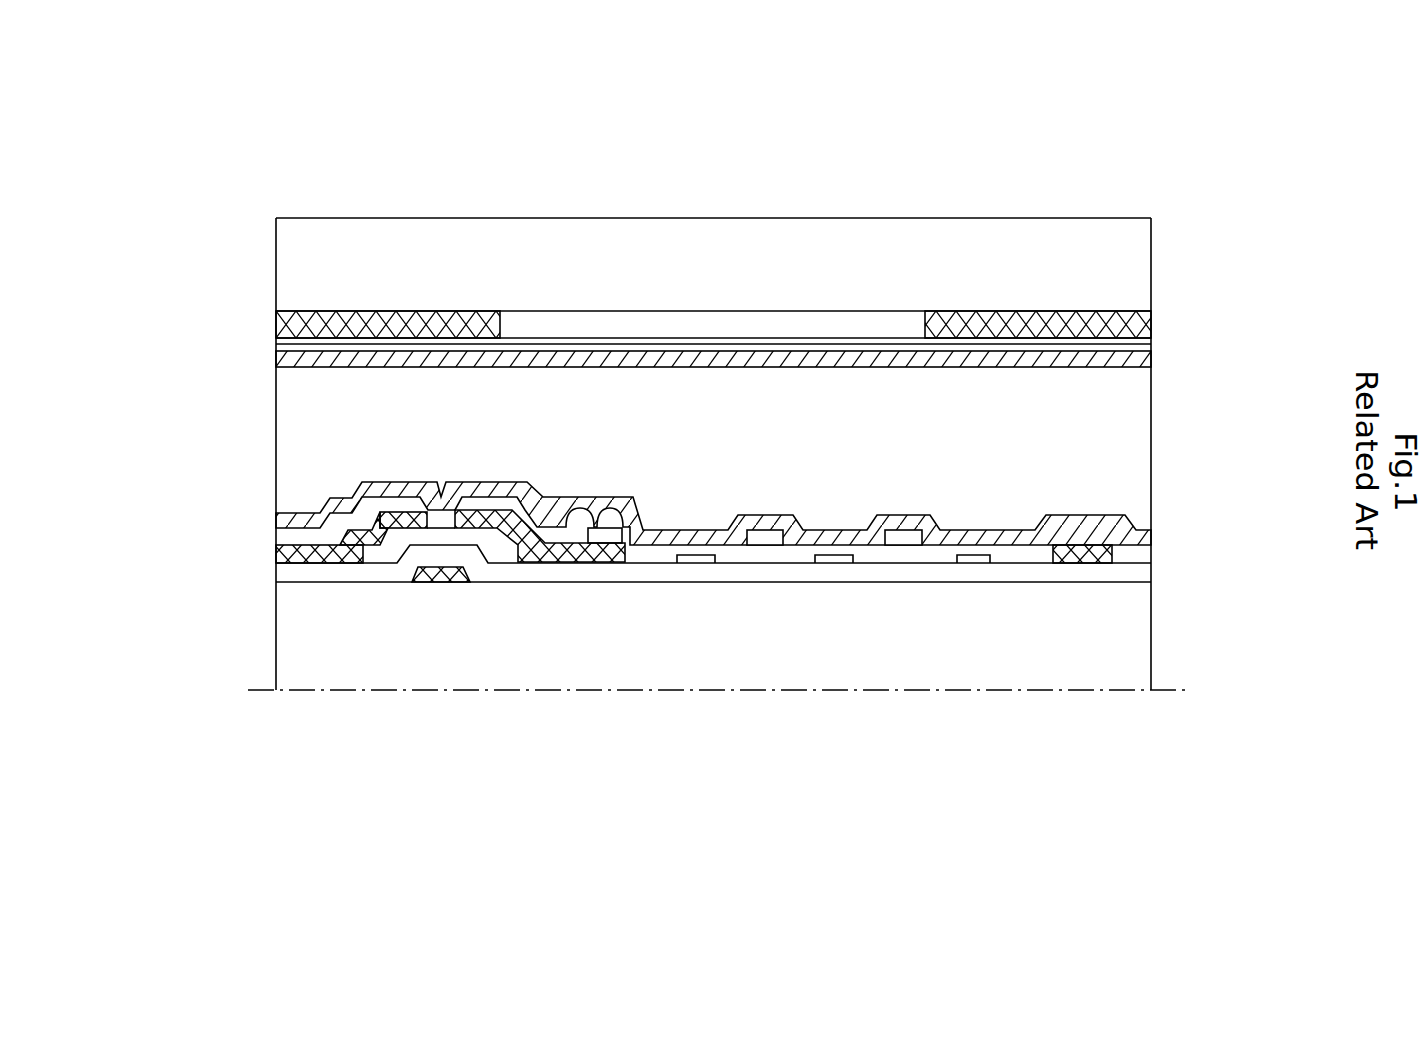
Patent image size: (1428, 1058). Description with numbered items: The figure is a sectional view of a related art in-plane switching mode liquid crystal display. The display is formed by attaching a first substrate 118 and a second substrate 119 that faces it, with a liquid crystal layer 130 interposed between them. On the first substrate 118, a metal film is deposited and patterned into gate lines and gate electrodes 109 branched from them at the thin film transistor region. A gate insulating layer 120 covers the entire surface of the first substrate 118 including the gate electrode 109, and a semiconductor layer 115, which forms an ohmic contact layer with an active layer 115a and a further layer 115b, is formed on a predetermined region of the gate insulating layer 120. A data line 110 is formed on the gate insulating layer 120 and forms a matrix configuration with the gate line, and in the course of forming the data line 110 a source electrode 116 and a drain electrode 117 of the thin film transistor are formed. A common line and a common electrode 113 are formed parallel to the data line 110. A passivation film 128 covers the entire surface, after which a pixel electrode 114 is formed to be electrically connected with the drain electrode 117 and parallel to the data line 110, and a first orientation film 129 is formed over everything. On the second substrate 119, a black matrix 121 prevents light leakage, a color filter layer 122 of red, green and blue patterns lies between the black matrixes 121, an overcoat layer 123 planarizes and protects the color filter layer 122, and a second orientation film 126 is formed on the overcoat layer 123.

The gate electrode 109 is at (448, 583).
The data line 110 is at (1082, 548).
The common electrode 113 is at (973, 560).
The pixel electrode 114 is at (900, 533).
The semiconductor layer 115 is at (243, 582).
The active layer 115a is at (367, 558).
The upper pixel electrode layer 115b is at (370, 543).
The source electrode 116 is at (397, 520).
The drain electrode 117 is at (552, 583).
The first substrate 118 is at (1137, 632).
The second substrate 119 is at (292, 262).
The gate insulating layer 120 is at (1137, 575).
The black matrix 121 is at (292, 323).
The color filter layer 122 is at (725, 325).
The overcoat layer 123 is at (292, 346).
The second orientation film 126 is at (1140, 361).
The passivation film 128 is at (1137, 554).
The first orientation film 129 is at (748, 515).
The liquid crystal layer 130 is at (1140, 418).